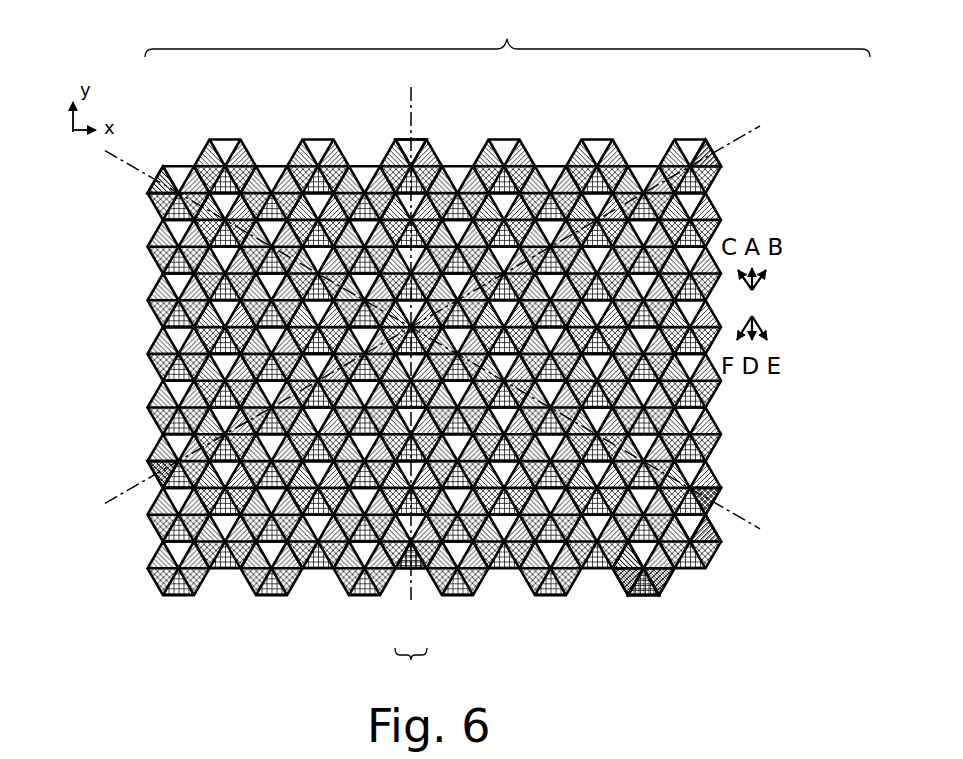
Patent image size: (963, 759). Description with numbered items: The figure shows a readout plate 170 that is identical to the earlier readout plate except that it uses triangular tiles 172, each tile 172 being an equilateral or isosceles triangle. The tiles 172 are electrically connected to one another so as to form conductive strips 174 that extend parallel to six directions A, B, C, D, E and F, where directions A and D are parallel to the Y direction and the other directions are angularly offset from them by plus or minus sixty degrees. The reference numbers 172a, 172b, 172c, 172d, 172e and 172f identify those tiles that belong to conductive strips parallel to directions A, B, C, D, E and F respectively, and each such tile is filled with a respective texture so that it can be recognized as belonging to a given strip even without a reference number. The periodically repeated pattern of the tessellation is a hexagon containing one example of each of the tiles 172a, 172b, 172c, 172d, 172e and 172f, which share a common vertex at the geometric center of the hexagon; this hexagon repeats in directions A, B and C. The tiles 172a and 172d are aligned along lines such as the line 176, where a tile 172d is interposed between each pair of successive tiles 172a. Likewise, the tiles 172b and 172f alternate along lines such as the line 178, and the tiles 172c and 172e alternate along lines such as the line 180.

The readout plate 170 is at (507, 34).
The triangular tiles 172 is at (148, 343).
The tile belonging to conductive strip parallel to direction A 172a is at (413, 572).
The tile belonging to conductive strip parallel to direction B 172b is at (156, 482).
The tile belonging to conductive strip parallel to direction C 172c is at (166, 186).
The tile belonging to conductive strip parallel to direction D 172d is at (408, 143).
The tile belonging to conductive strip parallel to direction E 172e is at (717, 494).
The tile belonging to conductive strip parallel to direction F 172f is at (723, 158).
The conductive strips 174 is at (410, 670).
The line parallel to the first and fourth directions 176 is at (412, 116).
The line parallel to the second and sixth directions 178 is at (754, 129).
The line parallel to the third and fifth directions 180 is at (171, 164).